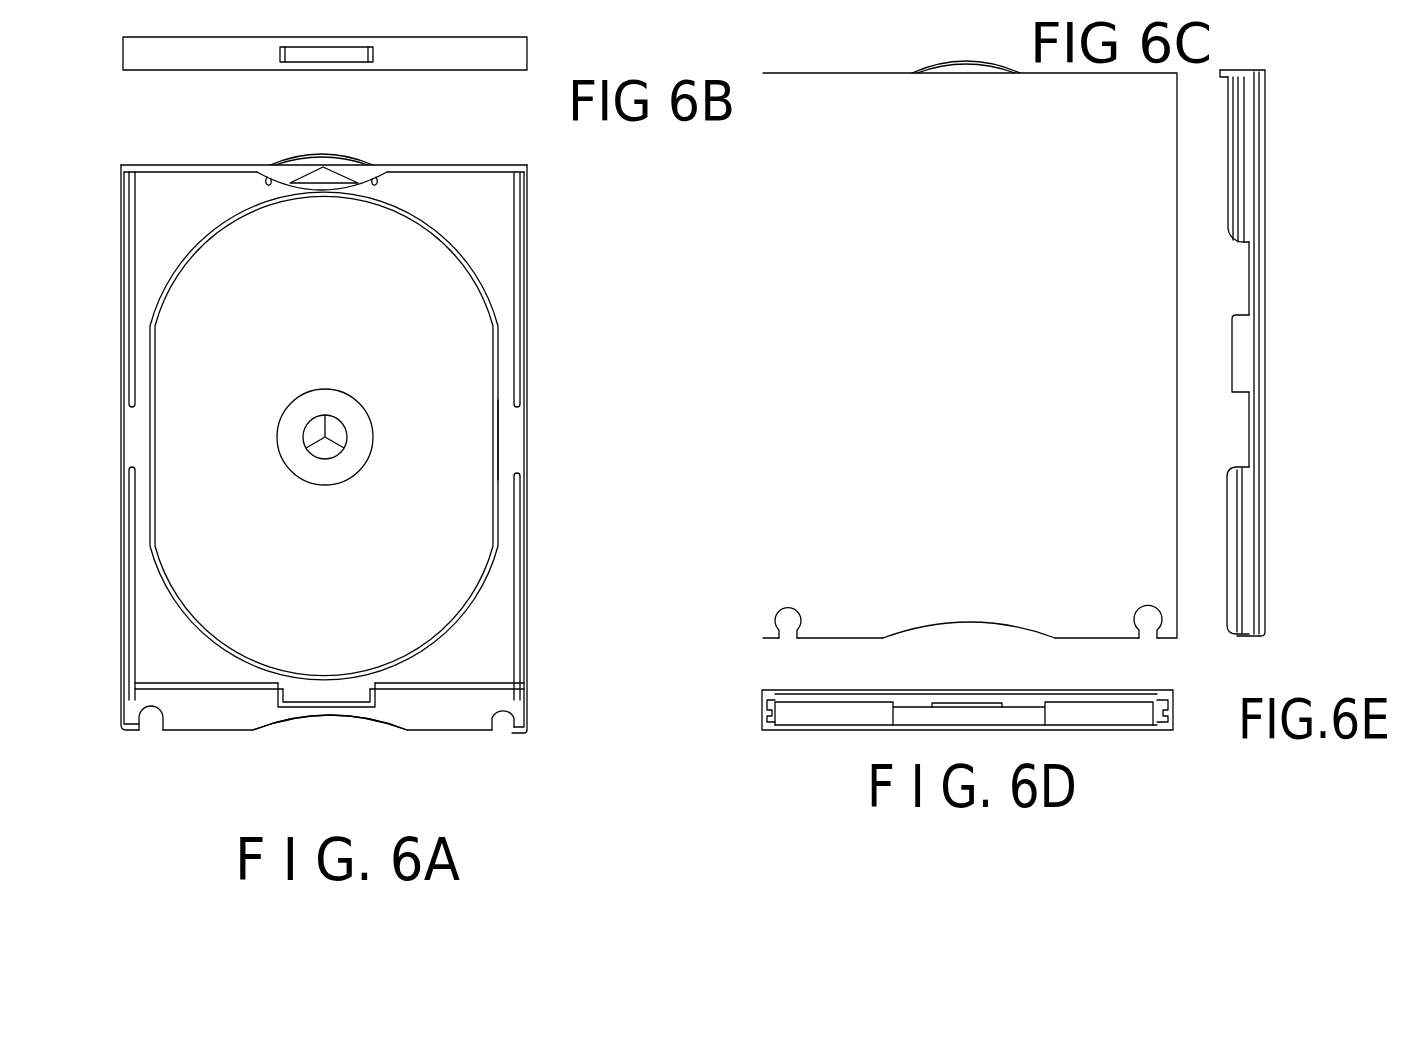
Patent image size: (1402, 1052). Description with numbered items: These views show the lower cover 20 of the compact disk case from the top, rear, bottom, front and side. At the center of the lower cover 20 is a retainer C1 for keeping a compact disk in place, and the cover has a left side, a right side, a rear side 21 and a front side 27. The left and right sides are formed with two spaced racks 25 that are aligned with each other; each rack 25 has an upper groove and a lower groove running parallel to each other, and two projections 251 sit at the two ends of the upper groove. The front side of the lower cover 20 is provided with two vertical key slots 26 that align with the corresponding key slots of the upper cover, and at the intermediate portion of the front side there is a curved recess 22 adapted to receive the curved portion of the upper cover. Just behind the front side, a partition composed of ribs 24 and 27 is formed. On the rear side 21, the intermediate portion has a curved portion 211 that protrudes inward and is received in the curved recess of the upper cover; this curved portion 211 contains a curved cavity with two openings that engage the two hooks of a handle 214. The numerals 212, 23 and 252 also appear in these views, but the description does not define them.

In FIG. 6A, the lower cover 20 is at (443, 182).
In FIG. 6C, the lower cover 20 is at (780, 279).
In FIG. 6B, the rear side 21 is at (518, 58).
In FIG. 6A, the rear side 21 is at (228, 165).
In FIG. 6A, the curved portion 211 is at (378, 183).
In FIG. 6B, the groove 212 is at (370, 63).
In FIG. 6B, the handle 214 is at (335, 63).
In FIG. 6A, the handle 214 is at (308, 157).
In FIG. 6A, the curved recess 22 is at (357, 715).
In FIG. 6C, the curved recess 22 is at (967, 623).
In FIG. 6A, the disc receiving recess 23 is at (458, 618).
In FIG. 6A, the rib 24 is at (504, 445).
In FIG. 6A, the rack 25 is at (525, 303).
In FIG. 6D, the rack 25 is at (770, 728).
In FIG. 6E, the rack 25 is at (1242, 353).
In FIG. 6D, the projection 251 is at (762, 712).
In FIG. 6E, the projection 251 is at (1238, 90).
In FIG. 6E, the lower end portion 252 is at (1248, 637).
In FIG. 6A, the vertical key slot 26 is at (160, 710).
In FIG. 6C, the vertical key slot 26 is at (1143, 632).
In FIG. 6A, the front side 27 is at (463, 689).
In FIG. 6A, the retainer C1 is at (352, 412).
In FIG. 6D, the retainer C1 is at (975, 703).
In FIG. 6E, the retainer C1 is at (1238, 347).